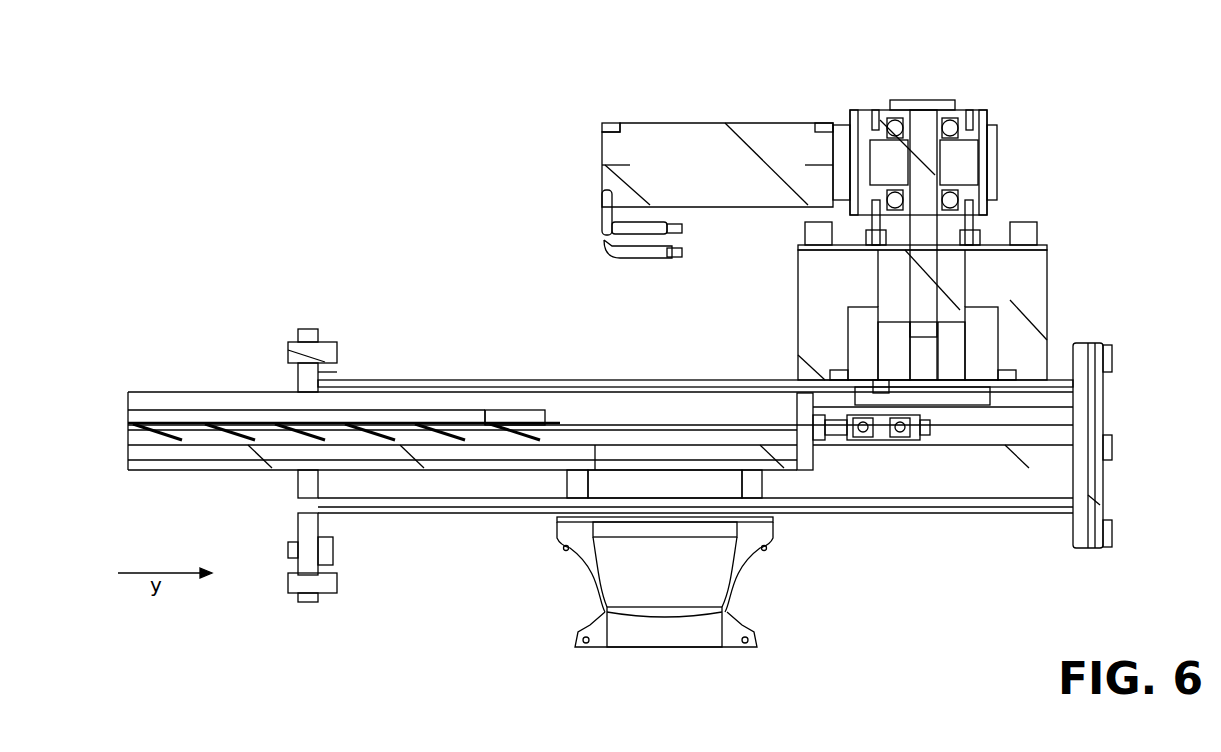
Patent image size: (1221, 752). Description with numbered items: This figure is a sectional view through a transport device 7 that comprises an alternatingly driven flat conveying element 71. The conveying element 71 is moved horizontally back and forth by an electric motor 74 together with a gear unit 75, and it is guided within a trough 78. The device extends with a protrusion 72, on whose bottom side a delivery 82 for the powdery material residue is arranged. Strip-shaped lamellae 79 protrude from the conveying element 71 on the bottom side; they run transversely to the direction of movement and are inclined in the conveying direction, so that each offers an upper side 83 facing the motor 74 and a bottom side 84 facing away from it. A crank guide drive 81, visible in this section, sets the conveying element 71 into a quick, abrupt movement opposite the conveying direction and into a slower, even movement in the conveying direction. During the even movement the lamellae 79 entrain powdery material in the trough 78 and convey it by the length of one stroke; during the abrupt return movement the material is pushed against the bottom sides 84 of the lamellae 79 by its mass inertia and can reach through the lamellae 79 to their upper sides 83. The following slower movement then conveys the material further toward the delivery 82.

The transport device 7 is at (208, 362).
The flat conveying element 71 is at (172, 437).
The protrusion 72 is at (462, 352).
The electric motor 74 is at (696, 150).
The gear unit 75 is at (1026, 205).
The trough 78 is at (266, 440).
The lamellae 79 is at (237, 440).
The crank guide drive 81 is at (938, 430).
The delivery 82 is at (588, 588).
The upper side 83 is at (514, 425).
The bottom side 84 is at (500, 440).